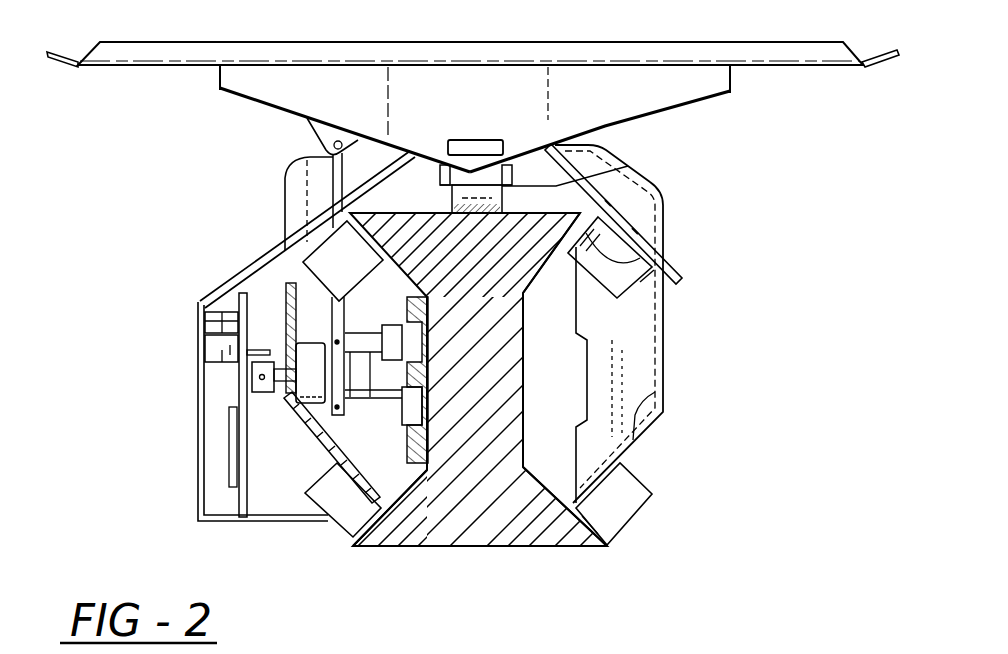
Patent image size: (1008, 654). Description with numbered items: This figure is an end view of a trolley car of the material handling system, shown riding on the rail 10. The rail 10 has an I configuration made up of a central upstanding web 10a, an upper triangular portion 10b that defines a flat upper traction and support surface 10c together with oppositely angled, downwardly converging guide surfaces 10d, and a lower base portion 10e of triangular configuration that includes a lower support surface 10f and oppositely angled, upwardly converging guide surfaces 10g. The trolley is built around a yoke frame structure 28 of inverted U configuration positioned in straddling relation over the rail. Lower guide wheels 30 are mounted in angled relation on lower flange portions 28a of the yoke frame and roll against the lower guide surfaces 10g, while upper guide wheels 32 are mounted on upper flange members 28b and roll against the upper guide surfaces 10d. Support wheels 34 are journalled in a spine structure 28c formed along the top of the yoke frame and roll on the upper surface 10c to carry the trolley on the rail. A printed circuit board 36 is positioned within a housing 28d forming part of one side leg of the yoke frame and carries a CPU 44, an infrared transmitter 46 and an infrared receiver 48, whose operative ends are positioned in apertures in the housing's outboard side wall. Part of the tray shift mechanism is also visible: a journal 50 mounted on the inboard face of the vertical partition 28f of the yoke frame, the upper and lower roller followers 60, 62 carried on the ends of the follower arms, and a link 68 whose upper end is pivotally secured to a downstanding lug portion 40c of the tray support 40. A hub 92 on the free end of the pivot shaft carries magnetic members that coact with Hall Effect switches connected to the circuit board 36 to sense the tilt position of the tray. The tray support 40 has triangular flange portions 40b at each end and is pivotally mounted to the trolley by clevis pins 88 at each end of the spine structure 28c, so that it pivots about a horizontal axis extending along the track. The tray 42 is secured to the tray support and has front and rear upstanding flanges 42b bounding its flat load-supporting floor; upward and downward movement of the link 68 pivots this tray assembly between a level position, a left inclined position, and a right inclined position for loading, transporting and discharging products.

The rail 10 is at (392, 568).
The central upstanding web 10a is at (524, 364).
The upper triangular portion 10b is at (508, 276).
The upper traction and support surface 10c is at (430, 208).
The downwardly converging guide surfaces 10d is at (618, 263).
The lower base portion 10e is at (477, 527).
The lower support surface 10f is at (538, 548).
The upwardly converging guide surfaces 10g is at (632, 512).
The yoke frame structure 28 is at (765, 350).
The lower flange portions 28a is at (286, 449).
The upper flange members 28b is at (315, 213).
The spine structure 28c is at (520, 168).
The housing 28d is at (205, 300).
The vertical partition 28f is at (205, 330).
The lower guide wheels 30 is at (636, 497).
The upper guide wheels 32 is at (642, 284).
The support wheels 34 is at (487, 199).
The printed circuit board 36 is at (216, 498).
The tray support 40 is at (197, 78).
The triangular flange portions 40b is at (733, 93).
The downstanding lug portion 40c is at (318, 135).
The tray 42 is at (60, 74).
The front and rear upstanding flanges 42b is at (613, 53).
The CPU 44 is at (229, 462).
The infrared transmitter 46 is at (205, 366).
The infrared receiver 48 is at (284, 300).
The journal 50 is at (310, 343).
The upper roller follower 60 is at (392, 328).
The lower roller follower 62 is at (405, 408).
The link 68 is at (301, 172).
The clevis pins 88 is at (479, 140).
The hub 92 is at (256, 394).